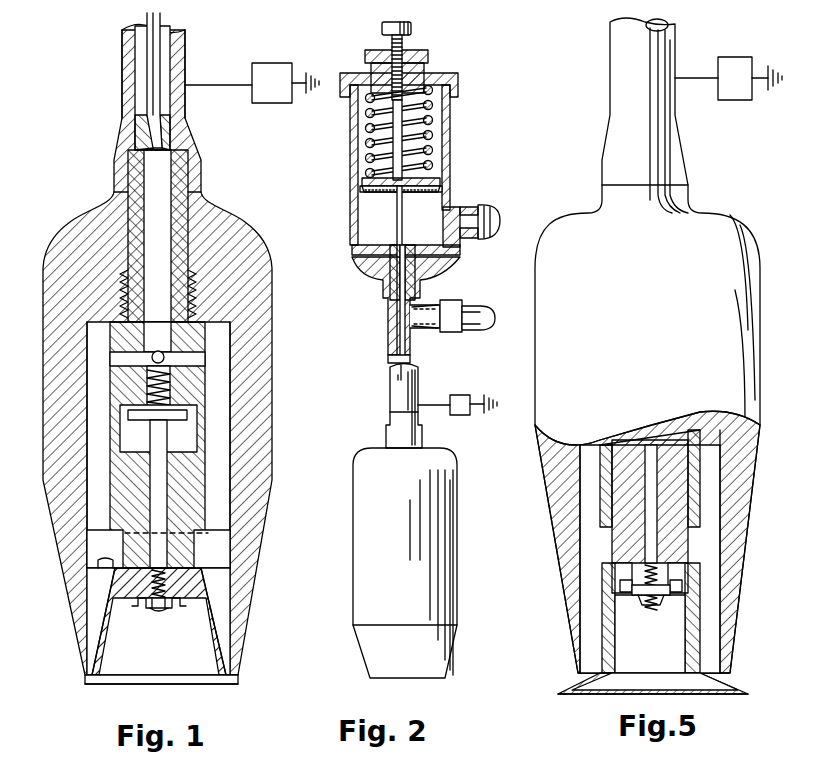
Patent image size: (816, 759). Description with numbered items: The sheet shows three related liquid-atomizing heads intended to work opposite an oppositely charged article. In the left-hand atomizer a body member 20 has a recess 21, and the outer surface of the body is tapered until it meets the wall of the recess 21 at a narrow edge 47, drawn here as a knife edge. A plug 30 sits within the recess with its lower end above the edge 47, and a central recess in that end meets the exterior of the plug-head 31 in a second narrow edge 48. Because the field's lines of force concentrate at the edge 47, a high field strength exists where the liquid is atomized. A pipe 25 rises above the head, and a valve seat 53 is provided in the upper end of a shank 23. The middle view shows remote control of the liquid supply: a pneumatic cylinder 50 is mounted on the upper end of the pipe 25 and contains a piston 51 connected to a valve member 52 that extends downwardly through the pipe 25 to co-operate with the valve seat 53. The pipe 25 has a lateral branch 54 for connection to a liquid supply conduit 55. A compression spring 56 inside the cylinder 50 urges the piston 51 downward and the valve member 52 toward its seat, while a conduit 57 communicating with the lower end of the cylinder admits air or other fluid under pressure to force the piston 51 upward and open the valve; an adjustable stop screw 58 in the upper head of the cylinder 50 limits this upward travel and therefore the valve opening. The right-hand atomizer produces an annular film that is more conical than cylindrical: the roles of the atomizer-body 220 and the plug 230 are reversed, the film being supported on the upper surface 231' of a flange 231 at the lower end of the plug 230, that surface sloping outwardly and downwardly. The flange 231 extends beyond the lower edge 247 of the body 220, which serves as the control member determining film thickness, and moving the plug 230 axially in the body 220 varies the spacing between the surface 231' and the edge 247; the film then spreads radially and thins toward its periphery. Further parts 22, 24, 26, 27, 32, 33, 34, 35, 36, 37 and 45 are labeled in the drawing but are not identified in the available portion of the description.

In FIG. 1, the body member 20 is at (43, 328).
In FIG. 2, the body member 20 is at (353, 552).
In FIG. 1, the recess 21 is at (100, 503).
In FIG. 1, the valve sleeve 22 is at (110, 392).
In FIG. 1, the shank 23 is at (135, 212).
In FIG. 1, the threads 24 is at (125, 290).
In FIG. 1, the pipe 25 is at (122, 102).
In FIG. 2, the pipe 25 is at (388, 322).
In FIG. 1, the central bore 26 is at (200, 210).
In FIG. 1, the transverse passage with ball 27 is at (200, 358).
In FIG. 1, the plug 30 is at (117, 562).
In FIG. 1, the plug-head 31 is at (108, 615).
In FIG. 1, the outer lower wall 32 is at (235, 662).
In FIG. 1, the valve stem 33 is at (185, 492).
In FIG. 1, the piston chamber 34 is at (185, 437).
In FIG. 1, the spring 35 is at (158, 453).
In FIG. 1, the nut 36 is at (152, 582).
In FIG. 1, the retaining bracket 37 is at (190, 604).
In FIG. 1, the electrical connection / sensor 45 is at (262, 63).
In FIG. 2, the electrical connection / sensor 45 is at (460, 415).
In FIG. 5, the electrical connection / sensor 45 is at (720, 96).
In FIG. 1, the narrow edge 47 is at (228, 684).
In FIG. 1, the narrow edge 48 is at (100, 684).
In FIG. 2, the pneumatic cylinder 50 is at (352, 140).
In FIG. 2, the piston 51 is at (362, 182).
In FIG. 1, the valve member 52 is at (153, 72).
In FIG. 2, the valve member 52 is at (397, 230).
In FIG. 1, the valve seat 53 is at (168, 122).
In FIG. 2, the lateral branch 54 is at (430, 330).
In FIG. 2, the liquid supply conduit 55 is at (484, 330).
In FIG. 2, the compression spring 56 is at (432, 152).
In FIG. 2, the conduit 57 is at (476, 207).
In FIG. 2, the adjustable stop screw 58 is at (398, 126).
In FIG. 5, the atomizer-body 220 is at (548, 590).
In FIG. 5, the plug 230 is at (605, 620).
In FIG. 5, the flange 231 is at (648, 705).
In FIG. 5, the upper surface 231' is at (616, 691).
In FIG. 5, the lower edge 247 is at (735, 672).